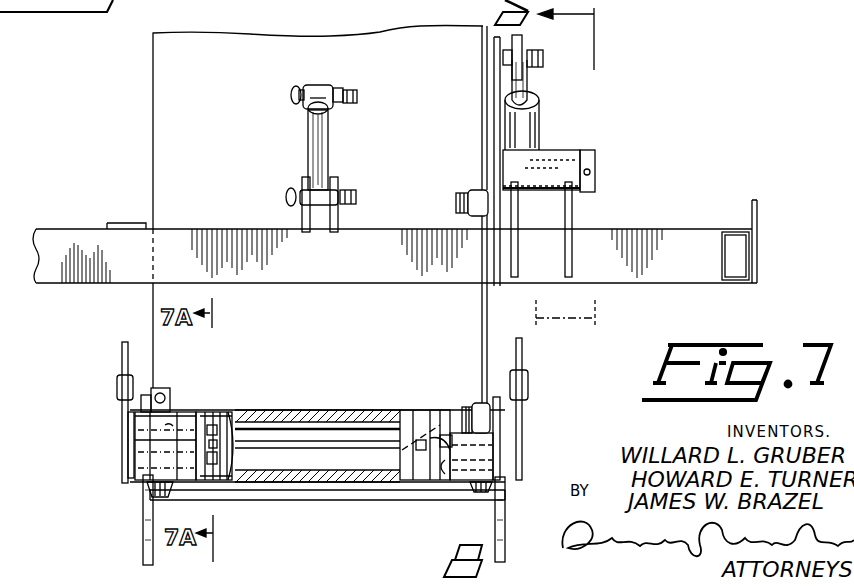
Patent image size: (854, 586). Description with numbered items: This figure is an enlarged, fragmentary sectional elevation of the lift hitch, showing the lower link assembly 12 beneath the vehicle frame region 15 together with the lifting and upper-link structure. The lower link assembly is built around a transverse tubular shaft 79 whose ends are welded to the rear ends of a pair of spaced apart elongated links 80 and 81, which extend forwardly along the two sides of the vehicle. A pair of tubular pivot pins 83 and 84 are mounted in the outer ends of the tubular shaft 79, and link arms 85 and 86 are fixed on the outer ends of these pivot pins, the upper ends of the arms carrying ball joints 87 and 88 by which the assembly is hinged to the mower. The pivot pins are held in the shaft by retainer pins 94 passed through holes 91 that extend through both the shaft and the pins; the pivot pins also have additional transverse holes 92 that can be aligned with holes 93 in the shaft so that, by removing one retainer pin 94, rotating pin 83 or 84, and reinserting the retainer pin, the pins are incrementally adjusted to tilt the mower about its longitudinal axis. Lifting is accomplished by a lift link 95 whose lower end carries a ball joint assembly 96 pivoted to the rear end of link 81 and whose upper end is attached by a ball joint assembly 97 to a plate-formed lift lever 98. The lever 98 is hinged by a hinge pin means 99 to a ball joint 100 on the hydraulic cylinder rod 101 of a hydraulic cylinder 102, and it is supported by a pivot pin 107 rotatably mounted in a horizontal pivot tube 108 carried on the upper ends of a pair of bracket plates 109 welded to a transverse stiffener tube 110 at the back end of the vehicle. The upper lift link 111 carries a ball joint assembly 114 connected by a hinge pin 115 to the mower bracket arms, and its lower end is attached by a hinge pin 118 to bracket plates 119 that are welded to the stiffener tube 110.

The cylinder assembly 12 is at (122, 463).
The housing 15 is at (166, 116).
The transverse tubular shaft 79 is at (318, 410).
The left link 80 is at (143, 513).
The right link 81 is at (496, 518).
The tubular pivot pin 83 is at (226, 452).
The tubular pivot pin 84 is at (420, 482).
The link arm 85 is at (128, 428).
The link arm 86 is at (518, 437).
The ball joint 87 is at (117, 386).
The ball joint 88 is at (529, 384).
The holes 91 is at (192, 410).
The transverse holes 92 is at (228, 415).
The holes 93 is at (244, 375).
The retainer pin 94 is at (161, 388).
The lift link 95 is at (480, 321).
The ball joint assembly 96 is at (478, 404).
The ball joint assembly 97 is at (455, 204).
The lift lever 98 is at (494, 132).
The hinge pin means 99 is at (538, 66).
The ball joint 100 is at (522, 40).
The hydraulic cylinder rod 101 is at (511, 92).
The hydraulic cylinder 102 is at (530, 140).
The pivot pin 107 is at (596, 162).
The horizontal pivot tube 108 is at (546, 170).
The bracket plates 109 is at (520, 256).
The transverse stiffener tube 110 is at (681, 240).
The upper lift link 111 is at (306, 128).
The ball joint assembly 114 is at (318, 86).
The hinge pin 115 is at (291, 94).
The hinge pin 118 is at (287, 196).
The bracket plates 119 is at (326, 234).